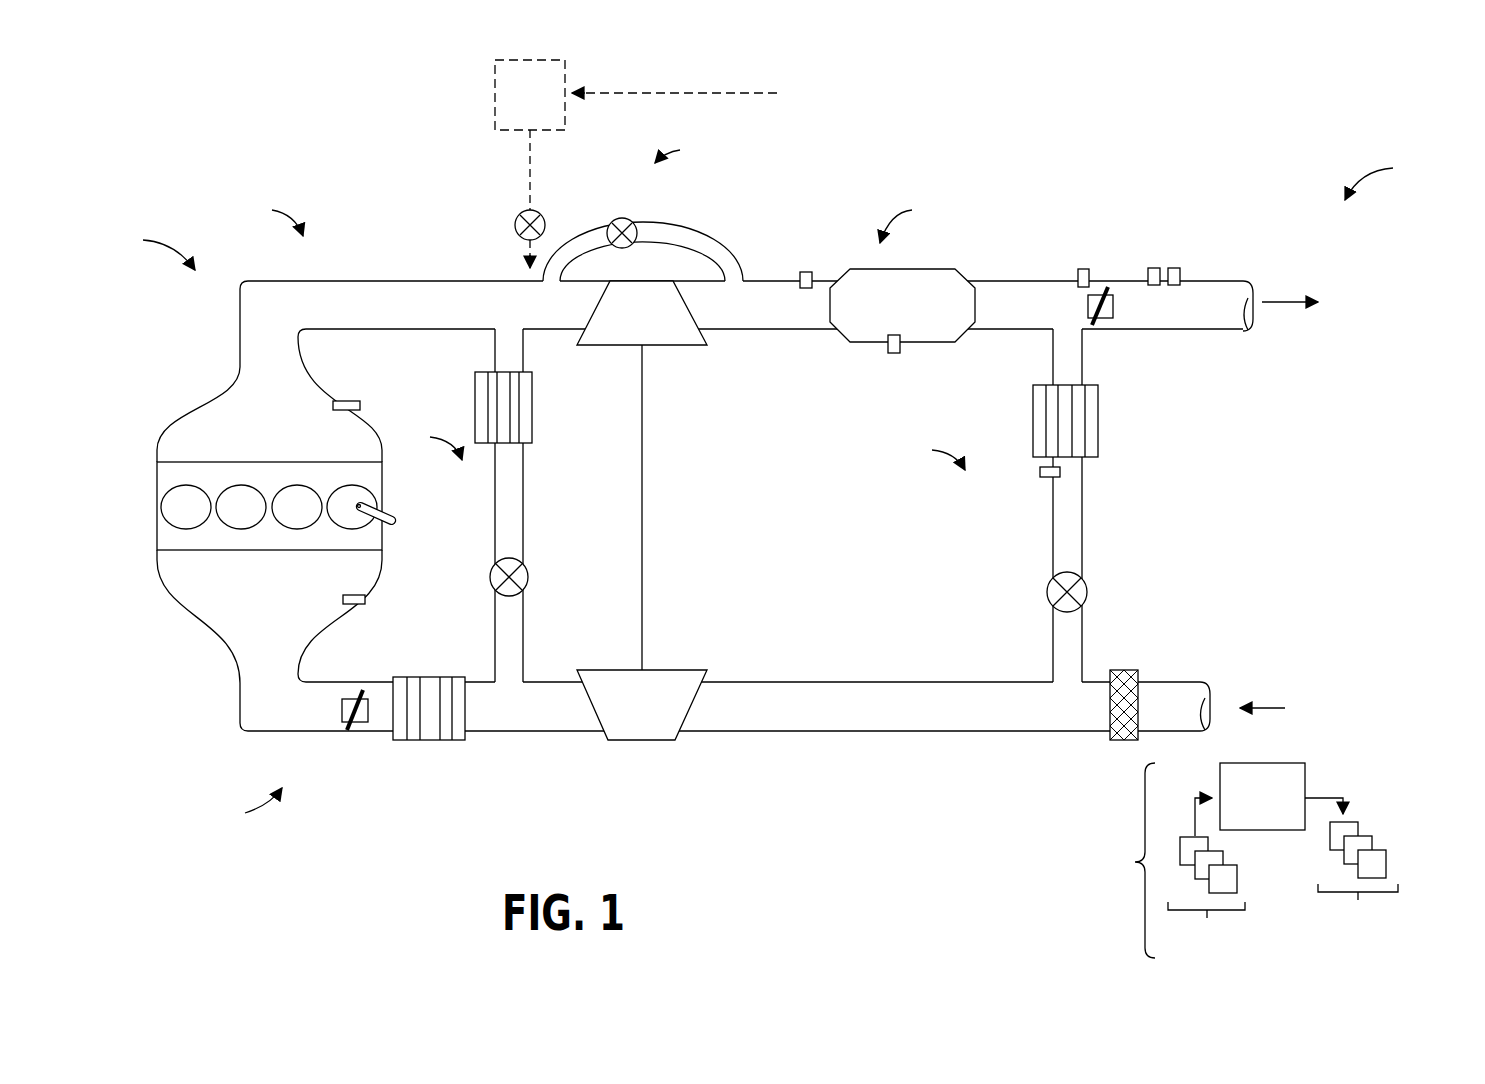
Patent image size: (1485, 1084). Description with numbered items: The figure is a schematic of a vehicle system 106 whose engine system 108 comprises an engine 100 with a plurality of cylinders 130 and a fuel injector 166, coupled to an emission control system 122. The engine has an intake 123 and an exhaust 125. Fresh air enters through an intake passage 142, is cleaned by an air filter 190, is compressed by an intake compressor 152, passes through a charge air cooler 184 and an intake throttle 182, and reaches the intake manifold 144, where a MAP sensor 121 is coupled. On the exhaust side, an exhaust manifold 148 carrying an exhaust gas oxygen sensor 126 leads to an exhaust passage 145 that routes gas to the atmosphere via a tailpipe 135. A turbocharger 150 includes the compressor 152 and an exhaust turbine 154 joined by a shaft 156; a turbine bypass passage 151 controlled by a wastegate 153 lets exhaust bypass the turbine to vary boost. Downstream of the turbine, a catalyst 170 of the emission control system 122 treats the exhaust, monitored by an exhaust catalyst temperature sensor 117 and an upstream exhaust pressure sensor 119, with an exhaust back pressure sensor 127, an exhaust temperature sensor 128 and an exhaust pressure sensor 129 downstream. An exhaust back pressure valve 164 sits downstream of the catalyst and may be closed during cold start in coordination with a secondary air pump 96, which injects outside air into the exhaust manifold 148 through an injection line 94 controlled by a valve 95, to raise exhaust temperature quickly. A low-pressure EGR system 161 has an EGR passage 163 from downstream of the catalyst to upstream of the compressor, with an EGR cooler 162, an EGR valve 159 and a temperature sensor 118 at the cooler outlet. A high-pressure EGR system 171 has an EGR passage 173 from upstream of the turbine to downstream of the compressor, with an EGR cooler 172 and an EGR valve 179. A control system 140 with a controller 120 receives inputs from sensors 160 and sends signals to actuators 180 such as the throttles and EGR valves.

The secondary air pump 96 is at (495, 92).
The injection line 94 is at (530, 185).
The valve 95 is at (538, 214).
The engine 100 is at (250, 462).
The vehicle system 106 is at (1388, 178).
The engine system 108 is at (152, 250).
The exhaust catalyst temperature sensor 117 is at (894, 353).
The temperature sensor 118 is at (1040, 471).
The exhaust pressure sensor 119 is at (806, 272).
The controller 120 is at (1269, 799).
The MAP sensor 121 is at (342, 604).
The emission control system 122 is at (915, 220).
The intake 123 is at (247, 805).
The exhaust 125 is at (270, 218).
The exhaust gas oxygen sensor 126 is at (338, 400).
The exhaust back pressure sensor 127 is at (1083, 269).
The exhaust temperature sensor 128 is at (1154, 268).
The exhaust pressure sensor 129 is at (1174, 268).
The cylinders 130 is at (180, 490).
The tailpipe 135 is at (1233, 281).
The control system 140 is at (1107, 860).
The intake passage 142 is at (1170, 682).
The intake manifold 144 is at (269, 640).
The exhaust passage 145 is at (335, 281).
The exhaust manifold 148 is at (269, 395).
The turbocharger 150 is at (687, 150).
The turbine bypass passage 151 is at (690, 222).
The intake compressor 152 is at (645, 740).
The wastegate 153 is at (618, 220).
The exhaust turbine 154 is at (628, 281).
The shaft 156 is at (642, 530).
The EGR valve 159 is at (1085, 586).
The sensors 160 is at (1206, 894).
The low-pressure EGR system 161 is at (931, 454).
The EGR cooler 162 is at (1033, 415).
The EGR passage 163 is at (1053, 530).
The exhaust back pressure valve 164 is at (1088, 308).
The fuel injector 166 is at (392, 525).
The catalyst 170 is at (902, 305).
The high-pressure EGR system 171 is at (429, 443).
The EGR cooler 172 is at (475, 405).
The EGR passage 173 is at (495, 520).
The EGR valve 179 is at (525, 570).
The actuators 180 is at (1360, 880).
The intake throttle 182 is at (342, 712).
The charge air cooler 184 is at (415, 677).
The air filter 190 is at (1122, 670).